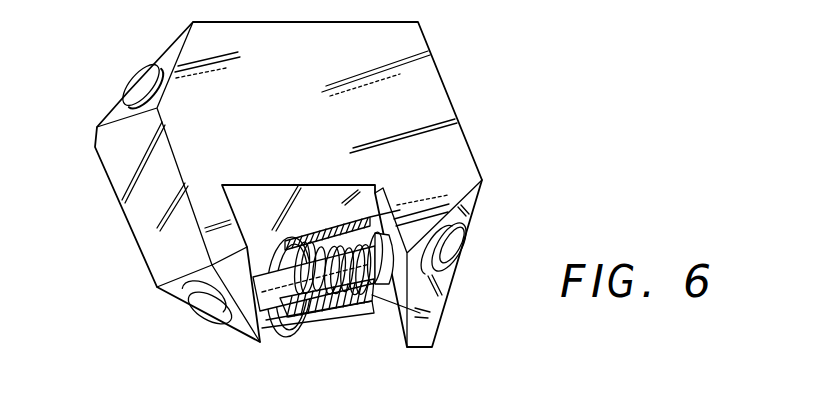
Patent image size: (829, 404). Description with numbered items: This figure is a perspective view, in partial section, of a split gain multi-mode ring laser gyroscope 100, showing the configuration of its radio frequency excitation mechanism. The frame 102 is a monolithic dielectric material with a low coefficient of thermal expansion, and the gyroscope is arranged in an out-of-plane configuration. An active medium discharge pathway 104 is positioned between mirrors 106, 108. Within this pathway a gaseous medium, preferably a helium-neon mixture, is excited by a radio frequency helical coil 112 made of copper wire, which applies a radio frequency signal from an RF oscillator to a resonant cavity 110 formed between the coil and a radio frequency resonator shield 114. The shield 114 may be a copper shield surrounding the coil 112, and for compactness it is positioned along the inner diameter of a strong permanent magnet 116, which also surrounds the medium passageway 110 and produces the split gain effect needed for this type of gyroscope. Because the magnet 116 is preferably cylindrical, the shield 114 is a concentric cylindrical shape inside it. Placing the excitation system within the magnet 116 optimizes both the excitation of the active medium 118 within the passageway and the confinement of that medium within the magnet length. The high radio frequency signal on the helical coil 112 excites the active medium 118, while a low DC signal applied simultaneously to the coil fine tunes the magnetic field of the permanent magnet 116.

The split gain multi-mode ring laser gyroscope 100 is at (445, 68).
The frame 102 is at (143, 204).
The active medium discharge pathway 104 is at (398, 222).
The mirror 106 is at (202, 312).
The mirror 108 is at (452, 246).
The resonant cavity 110 is at (380, 190).
The radio frequency helical coil 112 is at (323, 226).
The radio frequency resonator shield 114 is at (438, 317).
The permanent magnet 116 is at (332, 228).
The active medium 118 is at (275, 324).